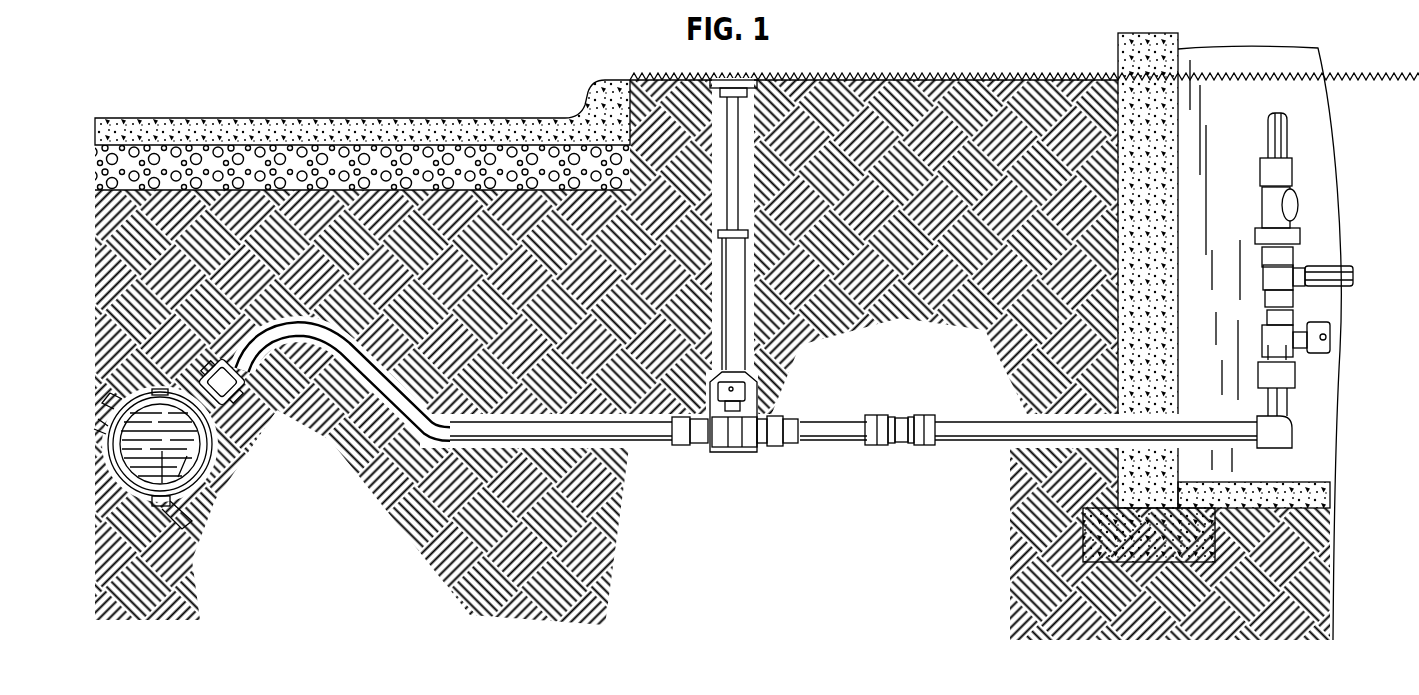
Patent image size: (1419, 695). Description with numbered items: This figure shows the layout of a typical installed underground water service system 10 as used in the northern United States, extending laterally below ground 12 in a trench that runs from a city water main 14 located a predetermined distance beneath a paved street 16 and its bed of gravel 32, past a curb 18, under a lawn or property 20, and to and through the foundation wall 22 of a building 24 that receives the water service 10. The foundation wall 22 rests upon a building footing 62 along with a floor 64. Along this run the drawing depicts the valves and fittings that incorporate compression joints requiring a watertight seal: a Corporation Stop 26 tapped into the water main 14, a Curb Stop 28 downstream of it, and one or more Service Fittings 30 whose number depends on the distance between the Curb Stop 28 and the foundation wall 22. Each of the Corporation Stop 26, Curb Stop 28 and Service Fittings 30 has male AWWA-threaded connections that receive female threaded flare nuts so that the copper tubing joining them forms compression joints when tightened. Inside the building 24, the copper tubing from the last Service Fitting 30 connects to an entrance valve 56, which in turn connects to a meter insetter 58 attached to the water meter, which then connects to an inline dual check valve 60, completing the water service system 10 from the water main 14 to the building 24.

The underground water service system 10 is at (772, 588).
The ground 12 is at (573, 360).
The city water main 14 is at (208, 525).
The paved street 16 is at (335, 118).
The curb 18 is at (598, 88).
The lawn or property 20 is at (822, 78).
The foundation wall 22 is at (1112, 48).
The building 24 is at (1247, 178).
The Corporation Stop 26 is at (255, 450).
The Curb Stop 28 is at (735, 452).
The Service Fitting 30 is at (893, 447).
The bed of gravel 32 is at (195, 573).
The entrance valve 56 is at (1335, 340).
The meter insetter 58 is at (1338, 276).
The inline dual check valve 60 is at (1300, 205).
The building footing 62 is at (1158, 562).
The floor 64 is at (1300, 484).